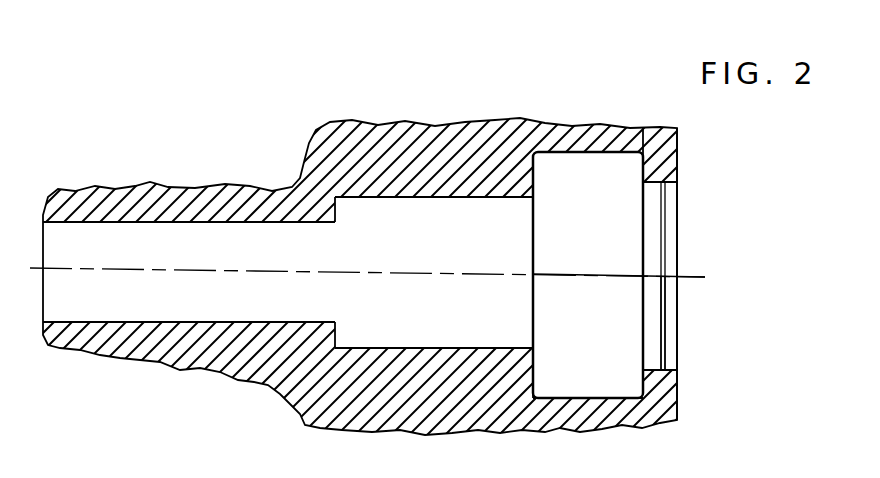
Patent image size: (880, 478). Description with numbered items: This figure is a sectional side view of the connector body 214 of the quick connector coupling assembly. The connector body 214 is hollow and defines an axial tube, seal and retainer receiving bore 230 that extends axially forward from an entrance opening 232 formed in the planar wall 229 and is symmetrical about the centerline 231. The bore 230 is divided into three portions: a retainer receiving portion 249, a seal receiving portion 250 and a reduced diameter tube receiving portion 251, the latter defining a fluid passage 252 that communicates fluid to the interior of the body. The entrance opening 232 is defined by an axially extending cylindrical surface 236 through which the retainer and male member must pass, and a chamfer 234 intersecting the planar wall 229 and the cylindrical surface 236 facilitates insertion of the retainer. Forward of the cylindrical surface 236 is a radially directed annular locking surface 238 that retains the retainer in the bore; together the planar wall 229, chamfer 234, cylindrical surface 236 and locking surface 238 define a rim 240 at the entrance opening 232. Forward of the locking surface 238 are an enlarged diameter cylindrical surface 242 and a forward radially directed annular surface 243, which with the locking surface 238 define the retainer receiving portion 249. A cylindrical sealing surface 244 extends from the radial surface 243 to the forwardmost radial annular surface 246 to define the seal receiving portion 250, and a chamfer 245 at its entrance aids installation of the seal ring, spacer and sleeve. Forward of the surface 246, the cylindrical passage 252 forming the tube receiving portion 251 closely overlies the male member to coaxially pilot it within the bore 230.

The connector body 214 is at (488, 92).
The reduced diameter tube receiving portion 251 is at (189, 240).
The fluid passage 252 is at (150, 322).
The seal receiving portion 250 is at (410, 272).
The cylindrical sealing surface 244 is at (365, 198).
The forwardmost radial annular surface 246 is at (338, 347).
The retainer receiving portion 249 is at (588, 275).
The chamfer 245 is at (534, 349).
The forward radially directed annular surface 243 is at (534, 376).
The enlarged diameter cylindrical surface 242 is at (568, 398).
The radially directed annular locking surface 238 is at (643, 166).
The chamfer 234 is at (679, 182).
The axially extending cylindrical surface 236 is at (662, 184).
The tube, seal and retainer receiving bore 230 is at (615, 245).
The entrance opening 232 is at (650, 276).
The centerline 231 is at (619, 280).
The rim 240 is at (651, 369).
The planar wall 229 is at (679, 402).